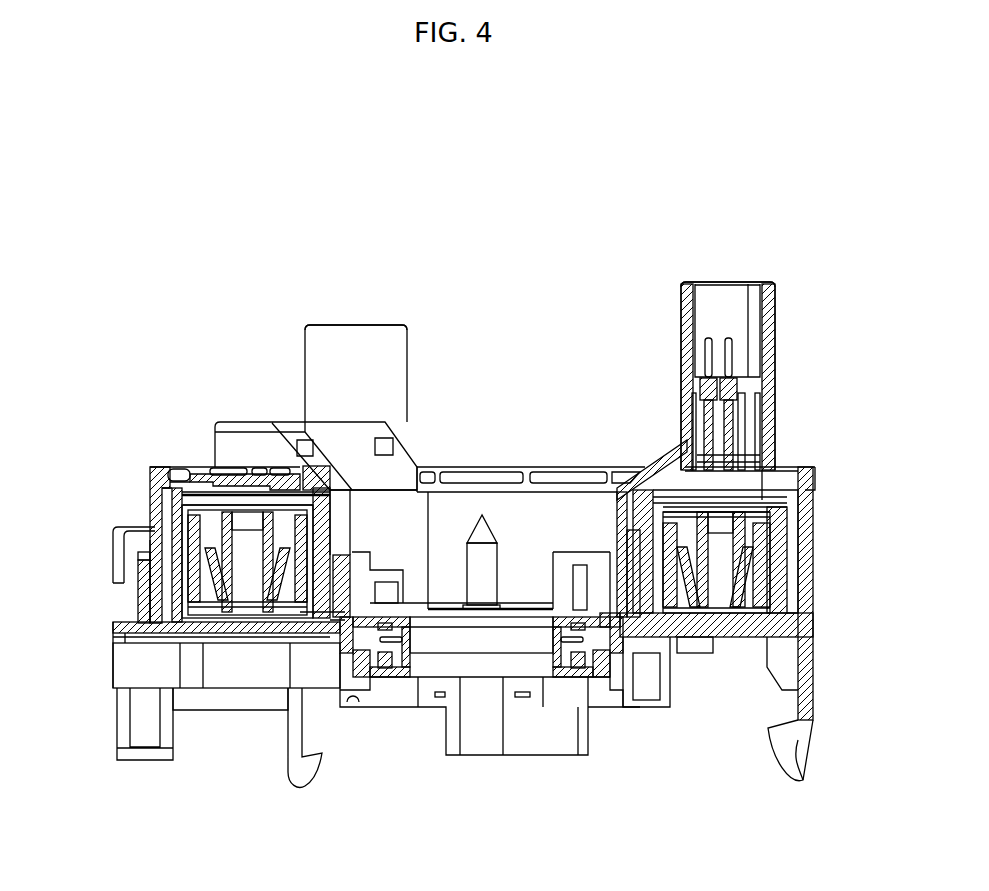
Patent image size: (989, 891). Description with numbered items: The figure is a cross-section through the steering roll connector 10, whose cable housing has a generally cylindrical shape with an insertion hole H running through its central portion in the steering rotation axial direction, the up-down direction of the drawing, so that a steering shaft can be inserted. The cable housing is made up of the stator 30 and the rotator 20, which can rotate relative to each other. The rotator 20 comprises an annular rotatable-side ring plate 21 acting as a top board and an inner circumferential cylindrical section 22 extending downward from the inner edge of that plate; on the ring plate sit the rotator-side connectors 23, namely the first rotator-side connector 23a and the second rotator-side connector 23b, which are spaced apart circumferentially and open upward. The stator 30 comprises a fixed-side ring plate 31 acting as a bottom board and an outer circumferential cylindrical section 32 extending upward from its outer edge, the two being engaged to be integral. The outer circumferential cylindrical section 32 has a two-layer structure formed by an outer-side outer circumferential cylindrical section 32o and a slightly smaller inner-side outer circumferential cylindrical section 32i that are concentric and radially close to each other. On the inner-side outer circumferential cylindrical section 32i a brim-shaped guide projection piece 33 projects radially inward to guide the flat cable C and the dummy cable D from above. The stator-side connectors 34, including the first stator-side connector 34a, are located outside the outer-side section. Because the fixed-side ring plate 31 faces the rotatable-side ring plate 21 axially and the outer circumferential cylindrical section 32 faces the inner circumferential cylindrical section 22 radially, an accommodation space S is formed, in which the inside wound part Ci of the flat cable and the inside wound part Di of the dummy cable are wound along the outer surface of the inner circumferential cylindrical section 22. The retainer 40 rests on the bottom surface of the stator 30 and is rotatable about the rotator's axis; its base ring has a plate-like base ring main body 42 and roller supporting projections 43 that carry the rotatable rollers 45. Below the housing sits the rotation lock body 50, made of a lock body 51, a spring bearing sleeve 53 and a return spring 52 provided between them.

The steering roll connector 10 is at (220, 292).
The rotator 20 is at (492, 462).
The rotatable-side ring plate 21 is at (190, 478).
The inner circumferential cylindrical section 22 is at (352, 503).
The rotator-side connectors 23 is at (540, 306).
The first rotator-side connector 23a is at (355, 325).
The second rotator-side connector 23b is at (718, 282).
The stator 30 is at (222, 712).
The fixed-side ring plate 31 is at (203, 707).
The outer circumferential cylindrical section 32 is at (62, 522).
The outer-side outer circumferential cylindrical section 32o is at (148, 543).
The inner-side outer circumferential cylindrical section 32i is at (147, 591).
The guide projection piece 33 is at (185, 487).
The stator-side connectors 34 is at (226, 629).
The first stator-side connector 34a is at (113, 677).
The retainer 40 is at (770, 604).
The base ring main body 42 is at (293, 637).
The roller supporting projections 43 is at (207, 600).
The rotatable rollers 45 is at (777, 578).
The rotation lock body 50 is at (433, 758).
The lock body 51 is at (408, 645).
The return spring 52 is at (408, 655).
The spring bearing sleeve 53 is at (367, 660).
The insertion hole H is at (542, 534).
The accommodation space S is at (762, 500).
The inside wound part of the flat cable Ci is at (670, 502).
The flat cable C is at (787, 497).
The inside wound part of the dummy cable Di is at (675, 480).
The dummy cable D is at (777, 518).